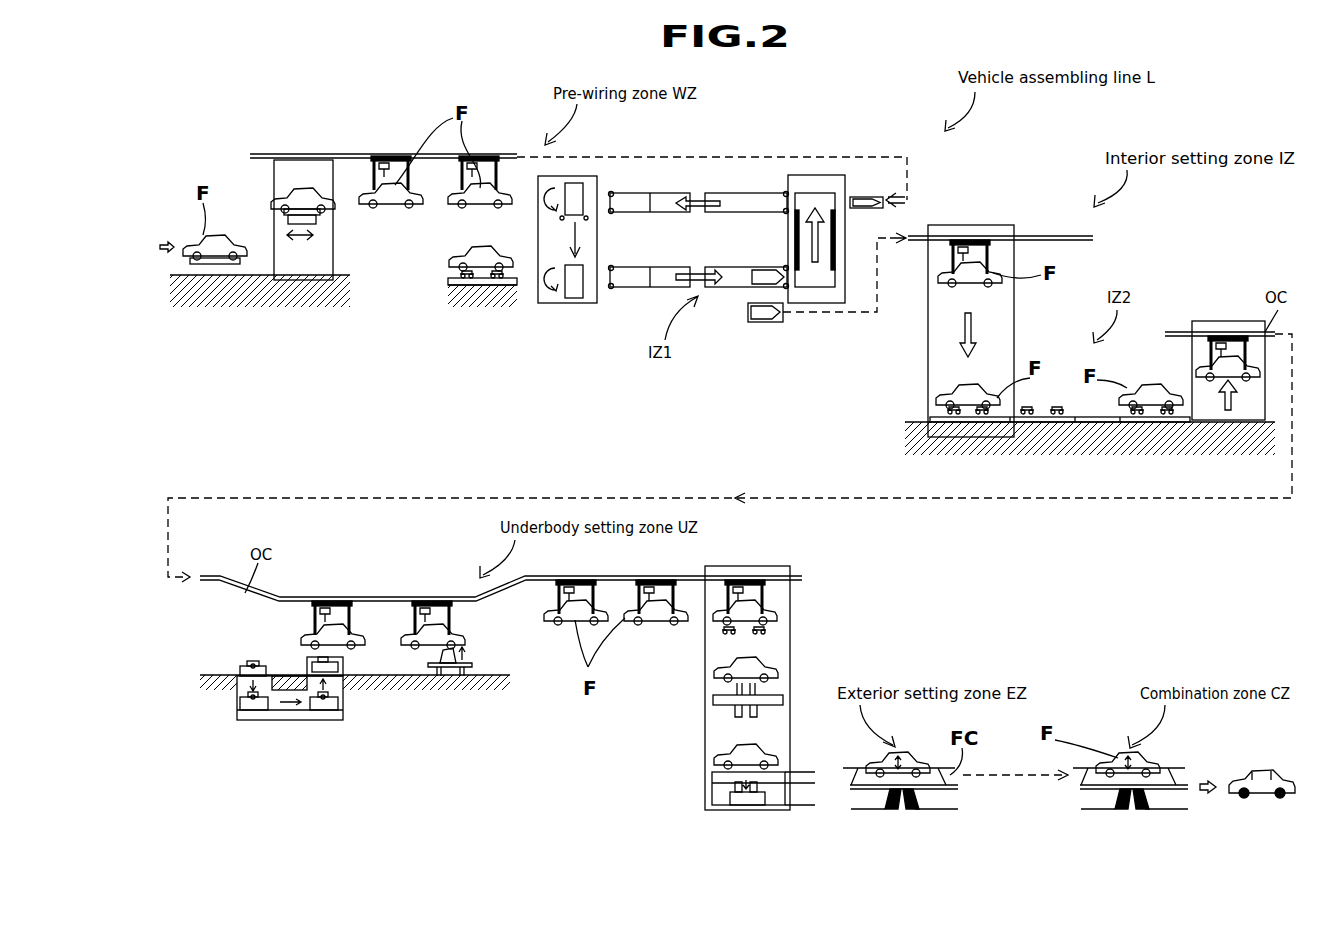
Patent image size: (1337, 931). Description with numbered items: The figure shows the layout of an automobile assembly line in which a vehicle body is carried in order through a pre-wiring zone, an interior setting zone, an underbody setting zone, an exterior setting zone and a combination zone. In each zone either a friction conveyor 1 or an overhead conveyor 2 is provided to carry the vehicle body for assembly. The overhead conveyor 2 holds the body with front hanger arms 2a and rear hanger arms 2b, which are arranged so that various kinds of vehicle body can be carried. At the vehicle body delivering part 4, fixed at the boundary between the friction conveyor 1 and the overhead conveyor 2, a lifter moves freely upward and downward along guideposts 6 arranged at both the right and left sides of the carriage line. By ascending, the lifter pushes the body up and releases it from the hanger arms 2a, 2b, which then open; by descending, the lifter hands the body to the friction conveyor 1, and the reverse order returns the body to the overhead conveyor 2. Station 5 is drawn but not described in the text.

The friction conveyor 1 is at (747, 181).
The overhead conveyor 2 is at (780, 378).
The front hanger arms 2a is at (508, 158).
The rear hanger arms 2b is at (458, 165).
The vehicle body delivering part 4 is at (307, 266).
The floor conveyor / dolly platform 5 is at (478, 281).
The guidepost 6 is at (705, 680).